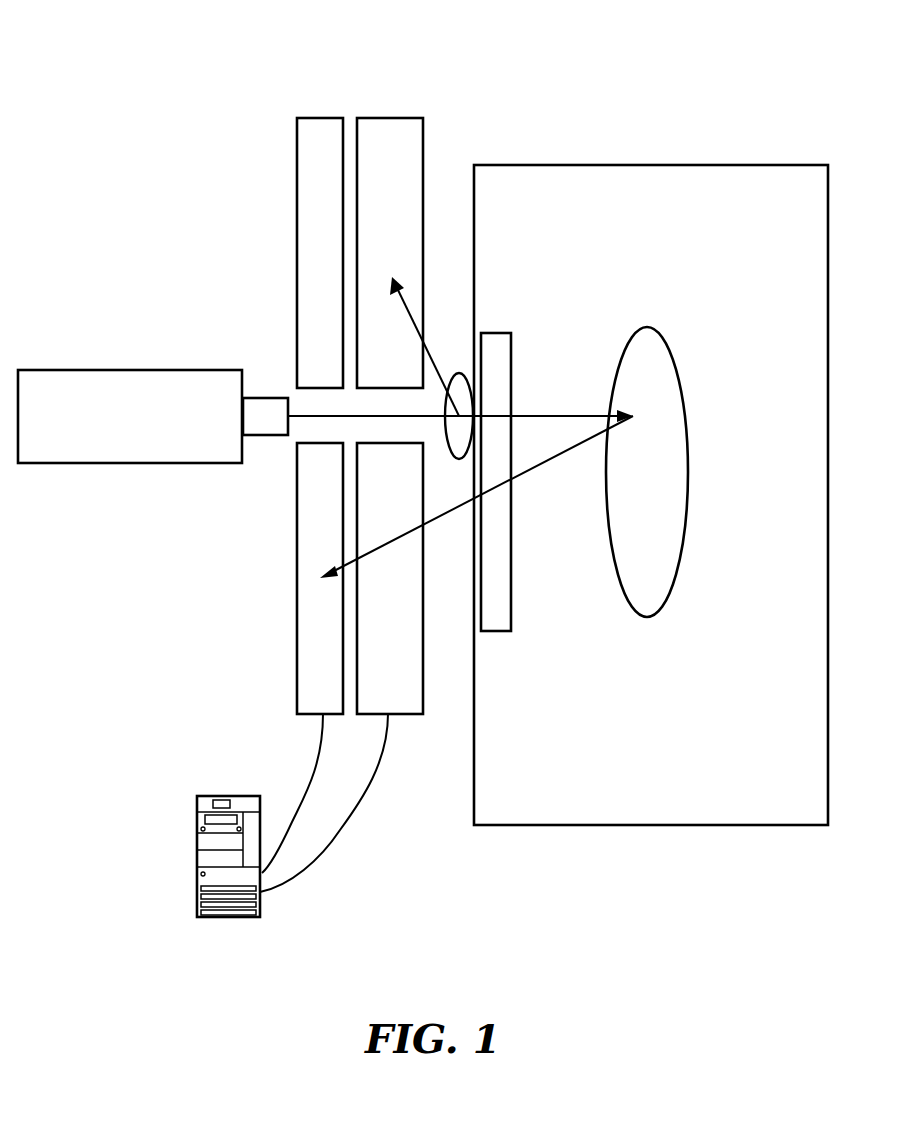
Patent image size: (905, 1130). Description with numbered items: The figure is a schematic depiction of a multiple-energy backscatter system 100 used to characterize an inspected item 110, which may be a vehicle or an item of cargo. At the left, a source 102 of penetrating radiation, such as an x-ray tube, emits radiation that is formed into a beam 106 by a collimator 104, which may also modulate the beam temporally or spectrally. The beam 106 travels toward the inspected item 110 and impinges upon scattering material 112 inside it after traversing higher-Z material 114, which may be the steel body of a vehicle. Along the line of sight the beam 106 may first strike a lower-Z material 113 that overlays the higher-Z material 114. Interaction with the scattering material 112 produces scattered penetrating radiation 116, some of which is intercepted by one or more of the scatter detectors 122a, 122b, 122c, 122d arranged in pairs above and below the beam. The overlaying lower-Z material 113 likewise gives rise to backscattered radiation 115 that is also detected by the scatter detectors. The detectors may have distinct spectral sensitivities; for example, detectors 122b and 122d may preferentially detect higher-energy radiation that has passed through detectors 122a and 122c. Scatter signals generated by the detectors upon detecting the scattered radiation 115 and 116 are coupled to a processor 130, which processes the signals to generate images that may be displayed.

The multiple-energy backscatter system 100 is at (158, 53).
The source of penetrating radiation 102 is at (149, 430).
The collimator 104 is at (258, 436).
The beam 106 is at (305, 415).
The inspected item 110 is at (672, 216).
The scattering material 112 is at (668, 486).
The lower-Z material 113 is at (457, 375).
The higher-Z material 114 is at (503, 333).
The backscattered radiation 115 is at (406, 310).
The scattered penetrating radiation 116 is at (553, 456).
The scatter detector 122a is at (408, 714).
The scatter detector 122b is at (305, 714).
The scatter detector 122c is at (390, 118).
The scatter detector 122d is at (320, 118).
The processor 130 is at (240, 917).